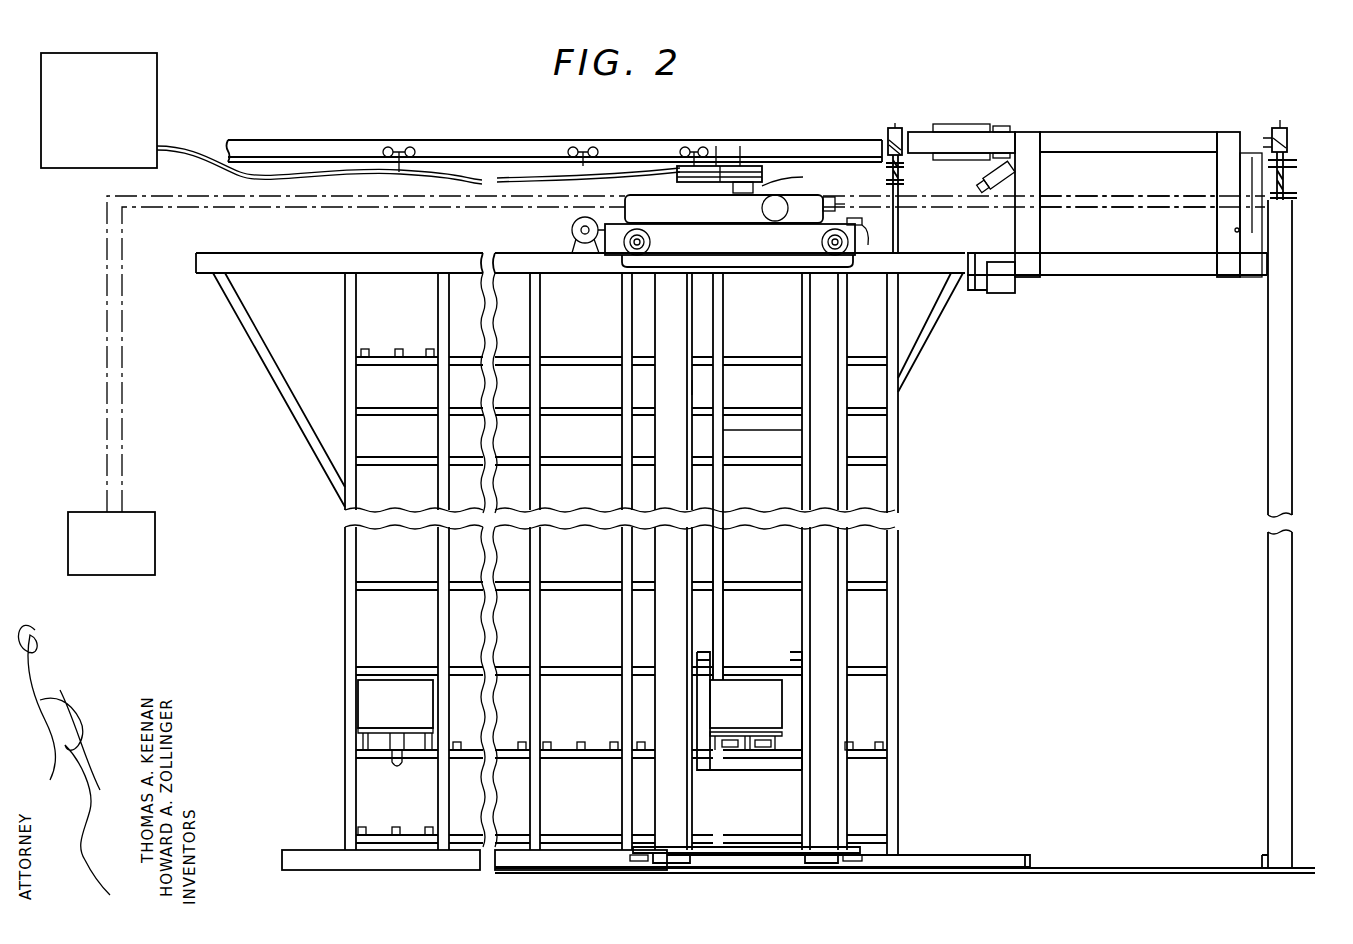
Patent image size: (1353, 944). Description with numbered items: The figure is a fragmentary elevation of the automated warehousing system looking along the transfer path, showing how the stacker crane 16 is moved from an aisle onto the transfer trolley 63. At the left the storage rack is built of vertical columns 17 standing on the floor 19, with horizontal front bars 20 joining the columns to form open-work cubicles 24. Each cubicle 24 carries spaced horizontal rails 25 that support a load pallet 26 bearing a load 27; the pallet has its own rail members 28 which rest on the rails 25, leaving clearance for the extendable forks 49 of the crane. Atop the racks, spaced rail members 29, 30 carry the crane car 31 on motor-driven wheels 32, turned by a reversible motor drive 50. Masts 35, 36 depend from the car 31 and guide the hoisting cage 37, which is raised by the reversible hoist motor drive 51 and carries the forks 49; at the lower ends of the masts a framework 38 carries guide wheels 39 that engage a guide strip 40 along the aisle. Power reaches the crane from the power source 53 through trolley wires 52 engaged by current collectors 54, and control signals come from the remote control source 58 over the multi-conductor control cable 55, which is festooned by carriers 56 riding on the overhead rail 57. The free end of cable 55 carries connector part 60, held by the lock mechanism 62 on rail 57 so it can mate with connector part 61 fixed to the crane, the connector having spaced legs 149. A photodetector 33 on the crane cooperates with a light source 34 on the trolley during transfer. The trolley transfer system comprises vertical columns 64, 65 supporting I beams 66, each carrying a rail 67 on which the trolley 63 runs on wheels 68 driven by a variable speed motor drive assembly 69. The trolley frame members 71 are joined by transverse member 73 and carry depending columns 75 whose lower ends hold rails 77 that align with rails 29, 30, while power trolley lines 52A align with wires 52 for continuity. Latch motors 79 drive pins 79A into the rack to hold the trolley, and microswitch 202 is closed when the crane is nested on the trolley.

The stacker crane 16 is at (743, 310).
The vertical column 17 is at (440, 549).
The floor 19 is at (1105, 868).
The horizontal front bar 20 is at (428, 415).
The cubicle 24 is at (485, 467).
The horizontal rail 25 is at (430, 349).
The load pallet 26 is at (380, 732).
The load 27 is at (570, 704).
The rail member 28 is at (397, 766).
The rail member 29 is at (780, 273).
The rail member 30 is at (705, 273).
The car 31 is at (640, 200).
The motor driven wheel 32 is at (652, 240).
The photodetector 33 is at (880, 258).
The light source 34 is at (1012, 180).
The mast 35 is at (805, 433).
The mast 36 is at (700, 387).
The hoisting cage 37 is at (712, 652).
The framework 38 is at (745, 862).
The guide wheel 39 is at (640, 866).
The guide strip 40 is at (940, 855).
The extendable fork 49 is at (762, 750).
The reversible motor drive 50 is at (570, 231).
The reversible hoist motor drive 51 is at (760, 208).
The trolley wires 52 is at (340, 207).
The power trolley lines 52A is at (1128, 191).
The power source 53 is at (111, 543).
The current collector 54 is at (836, 205).
The multi-conductor control cable 55 is at (440, 185).
The carrier 56 is at (420, 132).
The rail 57 is at (336, 140).
The control source 58 is at (99, 110).
The connector part 60 is at (684, 156).
The connector part 61 is at (747, 165).
The lock mechanism 62 is at (746, 134).
The transfer trolley 63 is at (1124, 286).
The vertical column 64 is at (905, 445).
The vertical column 65 is at (1270, 407).
The I beam 66 is at (905, 172).
The rail 67 is at (1292, 162).
The wheel 68 is at (1298, 93).
The variable speed motor drive assembly 69 is at (960, 125).
The frame member 71 is at (1120, 133).
The transverse member 73 is at (1238, 204).
The depending column 75 is at (1225, 185).
The rail 77 is at (1105, 255).
The latch motor 79 is at (1005, 285).
The pin 79A is at (975, 291).
The leg 149 is at (798, 175).
The microswitch 202 is at (1255, 250).